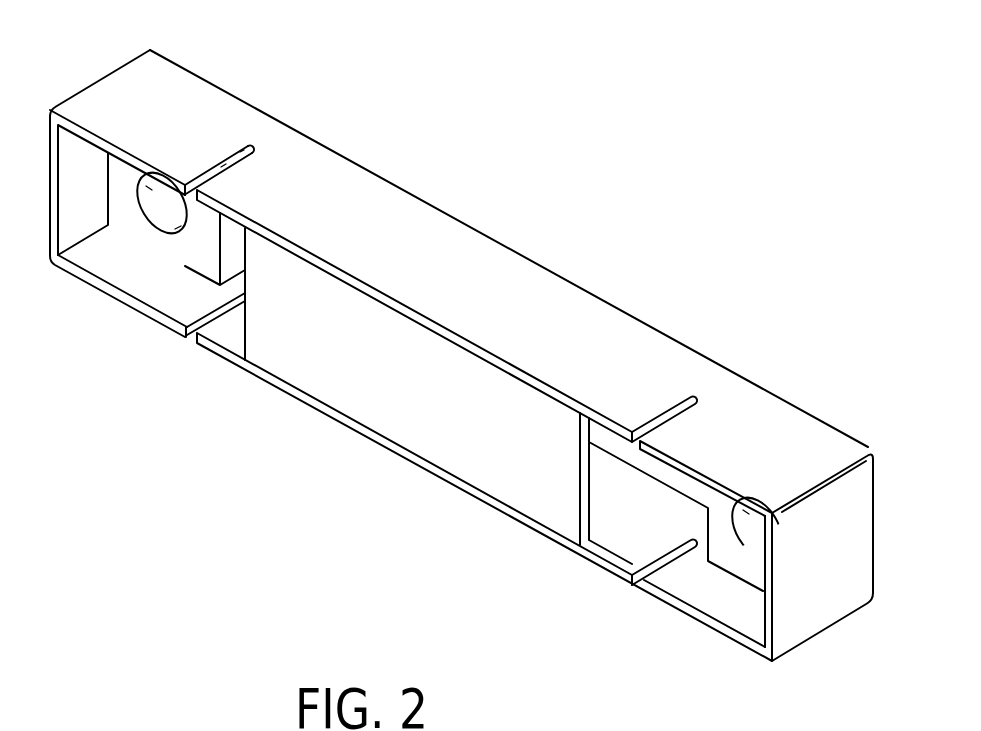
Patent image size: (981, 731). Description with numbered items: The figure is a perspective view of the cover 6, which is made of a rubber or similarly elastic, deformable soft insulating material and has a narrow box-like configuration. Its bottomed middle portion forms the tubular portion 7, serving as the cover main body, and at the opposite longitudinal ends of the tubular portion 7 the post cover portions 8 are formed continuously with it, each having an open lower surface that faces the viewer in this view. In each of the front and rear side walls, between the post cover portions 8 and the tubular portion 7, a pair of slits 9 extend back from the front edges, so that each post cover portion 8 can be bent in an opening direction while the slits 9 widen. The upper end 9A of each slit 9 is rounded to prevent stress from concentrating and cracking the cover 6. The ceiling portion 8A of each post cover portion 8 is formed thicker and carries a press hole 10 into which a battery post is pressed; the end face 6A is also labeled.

The cover 6 is at (651, 305).
The end face of bracket assembly 6A is at (45, 158).
The tubular portion 7 is at (534, 278).
The post cover portion 8 is at (194, 100).
The ceiling portion 8A is at (125, 213).
The slit 9 is at (227, 156).
The upper end of slit 9A is at (258, 148).
The press hole 10 is at (172, 213).